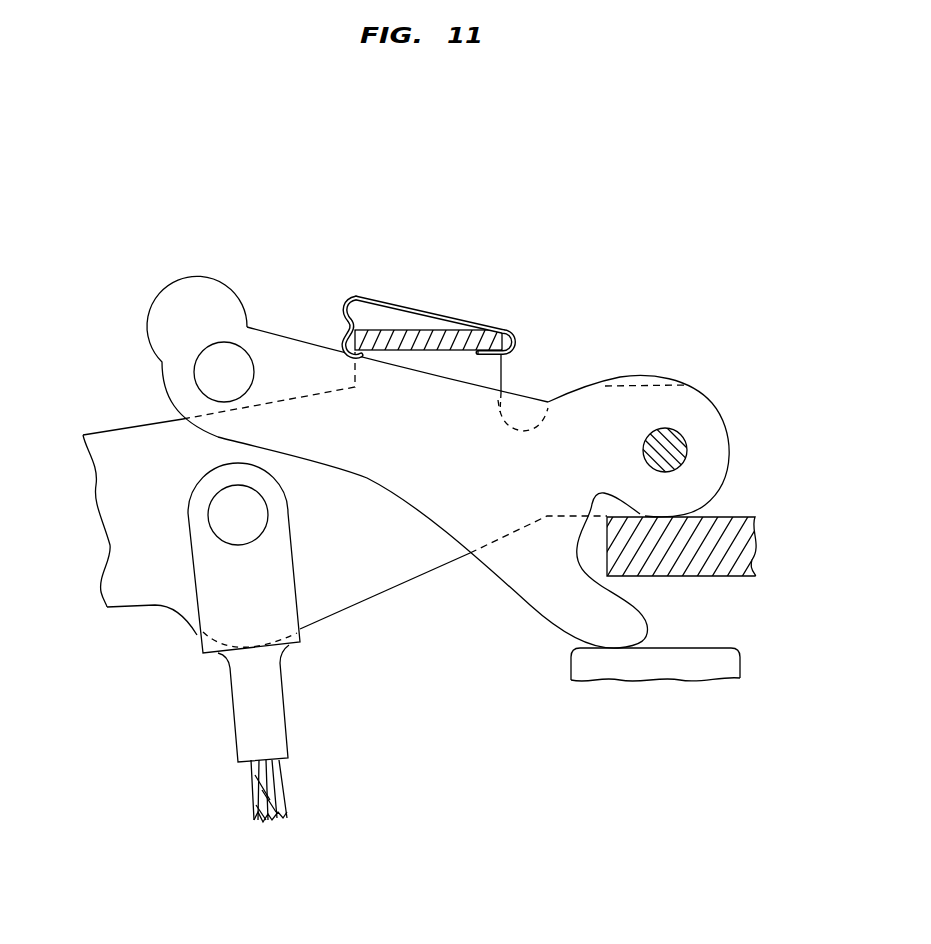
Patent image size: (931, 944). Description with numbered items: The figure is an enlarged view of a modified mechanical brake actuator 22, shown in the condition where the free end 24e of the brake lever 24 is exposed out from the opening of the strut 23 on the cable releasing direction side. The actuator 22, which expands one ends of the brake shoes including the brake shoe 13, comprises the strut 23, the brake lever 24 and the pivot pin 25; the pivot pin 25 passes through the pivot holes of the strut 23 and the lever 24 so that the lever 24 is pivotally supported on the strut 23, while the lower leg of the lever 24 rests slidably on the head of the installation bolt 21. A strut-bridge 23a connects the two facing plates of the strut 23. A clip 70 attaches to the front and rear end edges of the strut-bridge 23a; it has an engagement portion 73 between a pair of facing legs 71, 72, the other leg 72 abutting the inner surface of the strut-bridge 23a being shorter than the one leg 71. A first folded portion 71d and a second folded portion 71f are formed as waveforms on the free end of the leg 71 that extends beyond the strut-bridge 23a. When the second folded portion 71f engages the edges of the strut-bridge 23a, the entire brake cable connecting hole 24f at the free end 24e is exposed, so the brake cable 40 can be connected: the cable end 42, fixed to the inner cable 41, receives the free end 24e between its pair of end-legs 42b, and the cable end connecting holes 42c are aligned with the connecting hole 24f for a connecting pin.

The brake shoe 13 is at (760, 541).
The installation bolt 21 is at (742, 668).
The mechanical actuator 22 is at (442, 316).
The strut 23 is at (120, 427).
The strut-bridge 23a is at (430, 330).
The brake lever 24 is at (302, 338).
The free end 24e is at (172, 349).
The brake cable connecting hole 24f is at (218, 342).
The pivot pin 25 is at (681, 448).
The brake cable 40 is at (205, 642).
The inner cable 41 is at (252, 788).
The cable end 42 is at (228, 693).
The end-leg 42b is at (203, 578).
The cable end connecting hole 42c is at (208, 513).
The clip 70 is at (442, 302).
The leg 71 is at (477, 324).
The first folded portion 71d is at (345, 300).
The second folded portion 71f is at (338, 344).
The leg 72 is at (502, 375).
The engagement portion 73 is at (514, 340).